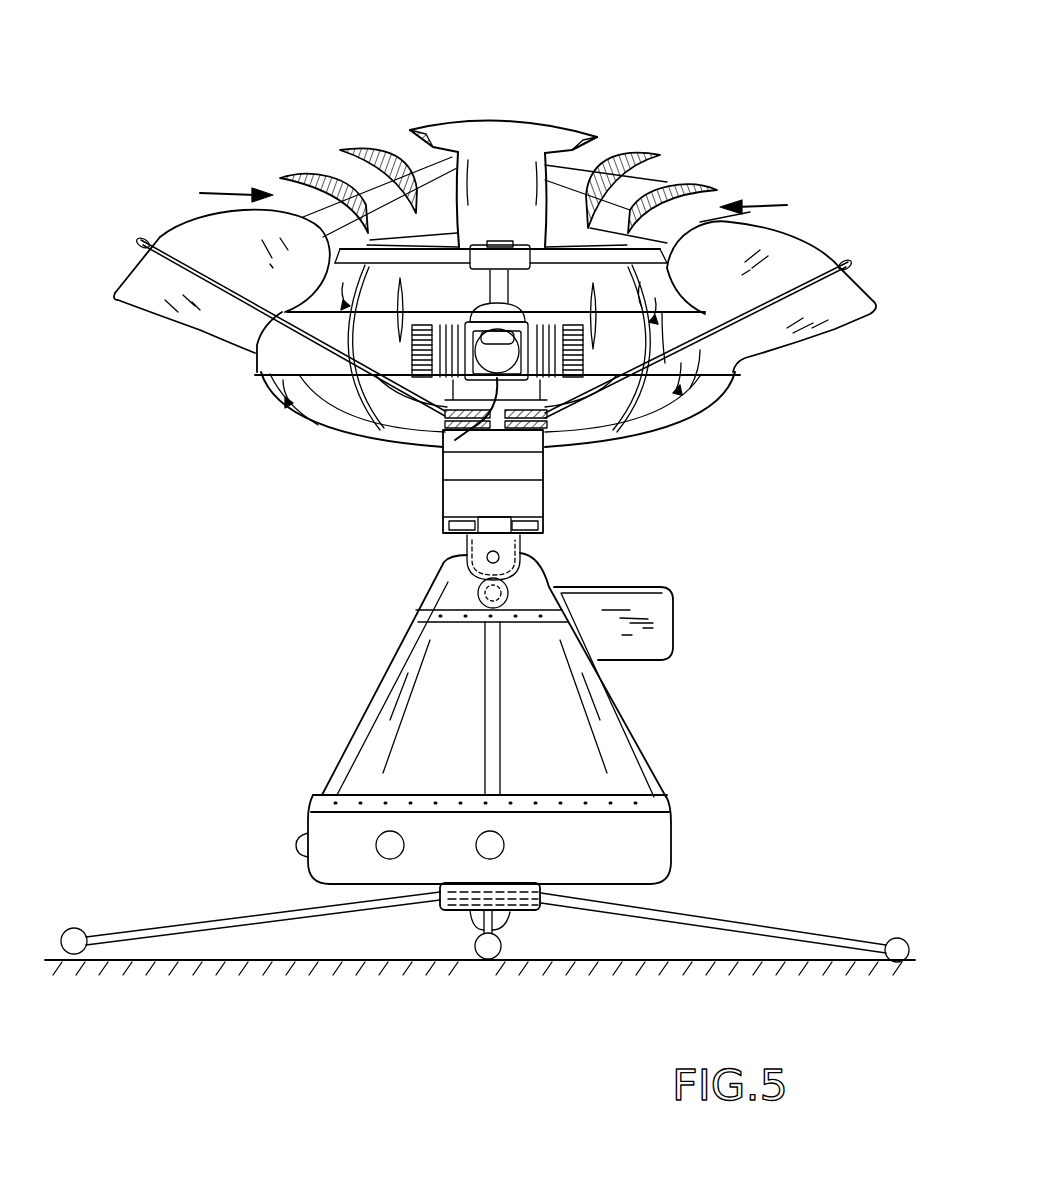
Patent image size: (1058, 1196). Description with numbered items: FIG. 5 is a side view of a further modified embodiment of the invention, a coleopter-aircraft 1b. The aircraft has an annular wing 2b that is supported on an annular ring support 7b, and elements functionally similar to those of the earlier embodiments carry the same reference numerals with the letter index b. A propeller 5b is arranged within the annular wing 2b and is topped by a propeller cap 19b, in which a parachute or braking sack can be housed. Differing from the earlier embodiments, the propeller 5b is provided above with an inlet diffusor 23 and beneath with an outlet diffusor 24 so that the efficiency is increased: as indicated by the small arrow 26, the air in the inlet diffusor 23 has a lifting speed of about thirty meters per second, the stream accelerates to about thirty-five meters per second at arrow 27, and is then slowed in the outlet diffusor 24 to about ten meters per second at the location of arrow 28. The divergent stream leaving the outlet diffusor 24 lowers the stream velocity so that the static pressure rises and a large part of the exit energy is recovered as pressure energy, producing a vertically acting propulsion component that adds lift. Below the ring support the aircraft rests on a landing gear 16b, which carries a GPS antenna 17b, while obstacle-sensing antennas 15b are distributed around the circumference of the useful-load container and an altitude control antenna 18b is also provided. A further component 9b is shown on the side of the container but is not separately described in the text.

The coleopter-aircraft 1b is at (818, 496).
The annular wing 2b is at (797, 257).
The propeller 5b is at (413, 257).
The annular ring support 7b is at (390, 417).
The side box 9b is at (657, 650).
The obstacle-sensing antenna 15b is at (483, 835).
The landing gear 16b is at (748, 927).
The GPS antenna 17b is at (901, 938).
The altitude control antenna 18b is at (512, 918).
The propeller cap 19b is at (530, 133).
The inlet diffusor 23 is at (630, 157).
The outlet diffusor 24 is at (383, 378).
The arrow 26 is at (770, 200).
The arrow 27 is at (668, 267).
The arrow 28 is at (690, 385).